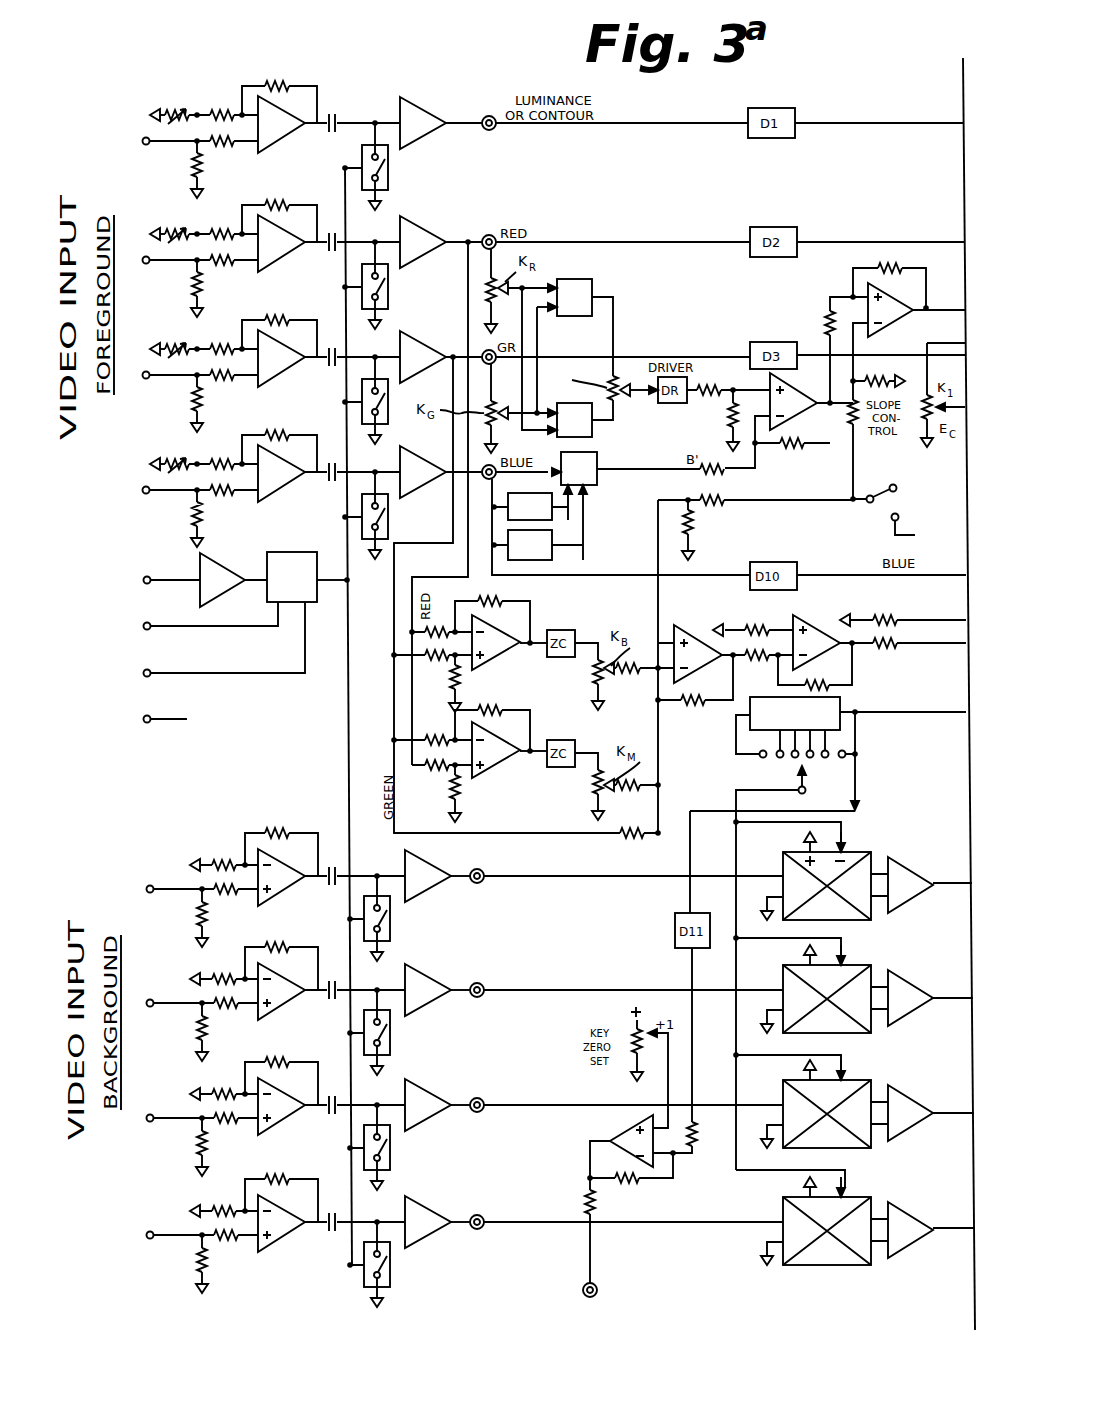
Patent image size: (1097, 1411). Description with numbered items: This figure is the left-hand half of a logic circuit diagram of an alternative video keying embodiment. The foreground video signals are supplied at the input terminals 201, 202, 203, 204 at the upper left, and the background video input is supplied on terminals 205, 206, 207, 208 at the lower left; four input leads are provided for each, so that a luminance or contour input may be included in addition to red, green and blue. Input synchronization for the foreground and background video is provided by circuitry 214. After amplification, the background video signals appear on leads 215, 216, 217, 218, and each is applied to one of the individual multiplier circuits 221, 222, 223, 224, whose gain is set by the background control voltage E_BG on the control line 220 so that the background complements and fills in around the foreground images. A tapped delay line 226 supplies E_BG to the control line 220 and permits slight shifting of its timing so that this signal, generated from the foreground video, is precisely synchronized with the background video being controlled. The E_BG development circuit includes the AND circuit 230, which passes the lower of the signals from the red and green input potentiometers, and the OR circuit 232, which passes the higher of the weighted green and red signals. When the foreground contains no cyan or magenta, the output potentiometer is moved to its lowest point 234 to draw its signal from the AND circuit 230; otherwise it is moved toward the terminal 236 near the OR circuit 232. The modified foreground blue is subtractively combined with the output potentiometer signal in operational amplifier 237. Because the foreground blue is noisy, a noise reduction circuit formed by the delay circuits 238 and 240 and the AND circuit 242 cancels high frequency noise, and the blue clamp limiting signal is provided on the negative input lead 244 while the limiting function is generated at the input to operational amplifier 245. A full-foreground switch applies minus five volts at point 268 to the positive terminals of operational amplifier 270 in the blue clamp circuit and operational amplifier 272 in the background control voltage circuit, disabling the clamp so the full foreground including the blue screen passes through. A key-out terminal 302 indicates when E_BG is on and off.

The foreground video input terminal 201 is at (146, 137).
The foreground video input terminal 202 is at (145, 257).
The foreground video input terminal 203 is at (144, 377).
The foreground video input terminal 204 is at (143, 492).
The background video input terminal 205 is at (150, 885).
The background video input terminal 206 is at (152, 999).
The background video input terminal 207 is at (150, 1125).
The background video input terminal 208 is at (150, 1242).
The input synchronization circuitry 214 is at (209, 641).
The background video lead 215 is at (612, 879).
The background video lead 216 is at (531, 986).
The background video lead 217 is at (523, 1100).
The background video lead 218 is at (512, 1218).
The control line 220 is at (738, 790).
The multiplier circuit 221 is at (862, 922).
The multiplier circuit 222 is at (862, 1035).
The multiplier circuit 223 is at (862, 1151).
The multiplier circuit 224 is at (832, 1266).
The tapped delay line 226 is at (852, 698).
The AND circuit 230 is at (597, 440).
The OR circuit 232 is at (572, 279).
The lowest point of potentiometer K2 234 is at (626, 413).
The terminal 236 is at (613, 332).
The operational amplifier 237 is at (795, 390).
The delay circuit 238 is at (494, 507).
The delay circuit 240 is at (552, 558).
The AND circuit 242 is at (597, 487).
The negative input lead 244 is at (917, 642).
The operational amplifier 245 is at (820, 626).
The circuit point 268 is at (853, 497).
The operational amplifier 270 is at (688, 628).
The operational amplifier 272 is at (899, 298).
The key-out terminal 302 is at (597, 1290).